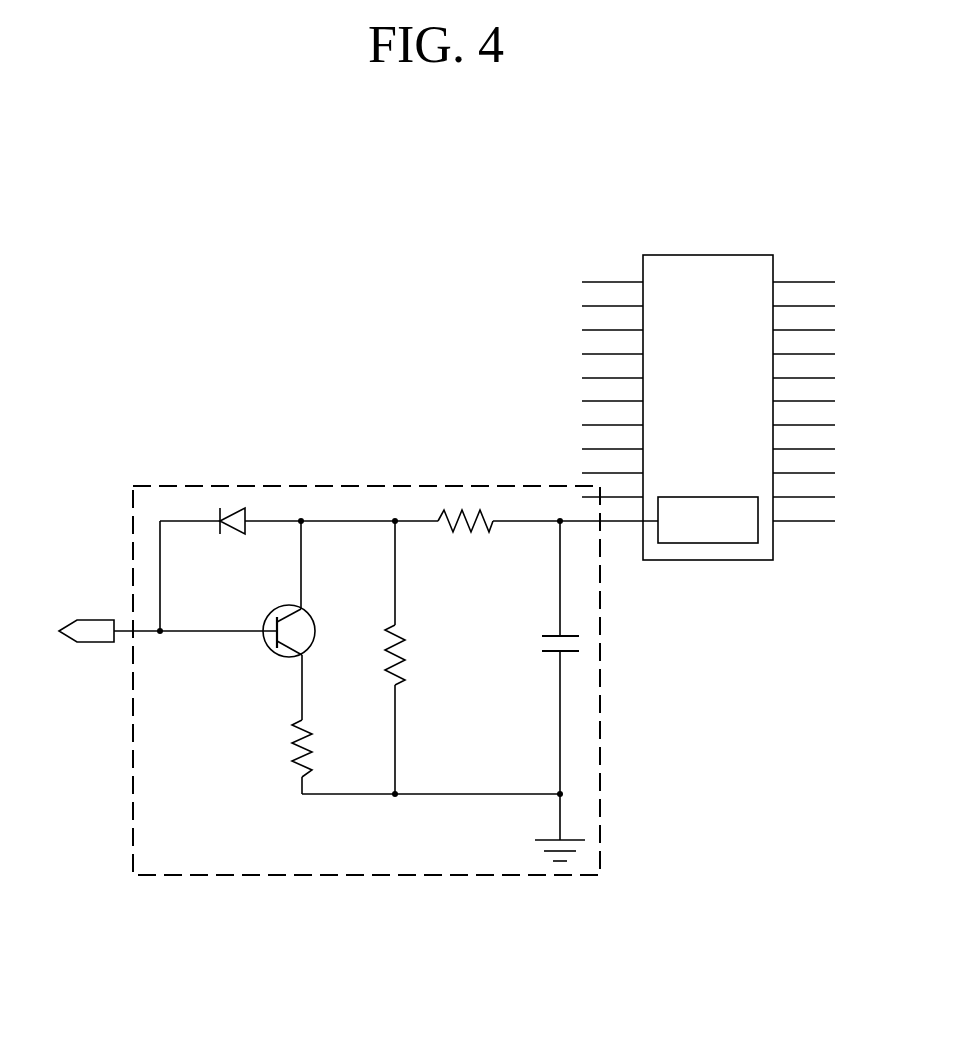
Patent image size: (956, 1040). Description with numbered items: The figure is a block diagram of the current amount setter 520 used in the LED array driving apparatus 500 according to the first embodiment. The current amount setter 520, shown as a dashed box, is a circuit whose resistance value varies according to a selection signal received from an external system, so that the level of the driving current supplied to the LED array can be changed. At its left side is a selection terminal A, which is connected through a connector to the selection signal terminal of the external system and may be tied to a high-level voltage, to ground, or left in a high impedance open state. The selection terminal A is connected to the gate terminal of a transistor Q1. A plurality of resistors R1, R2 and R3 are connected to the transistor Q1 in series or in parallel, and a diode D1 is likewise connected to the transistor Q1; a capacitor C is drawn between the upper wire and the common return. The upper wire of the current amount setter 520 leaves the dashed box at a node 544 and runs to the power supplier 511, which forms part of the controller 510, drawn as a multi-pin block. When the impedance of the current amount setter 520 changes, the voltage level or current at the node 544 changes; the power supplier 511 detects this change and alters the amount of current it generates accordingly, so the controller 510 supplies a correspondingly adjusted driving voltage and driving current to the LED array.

The LED array driving apparatus 500 is at (210, 237).
The controller 510 is at (689, 396).
The power supplier 511 is at (689, 532).
The current amount setter 520 is at (372, 485).
The node 544 is at (602, 522).
The selection terminal A is at (98, 631).
The diode D1 is at (232, 536).
The transistor Q1 is at (298, 626).
The resistor R1 is at (465, 534).
The resistor R2 is at (410, 655).
The resistor R3 is at (316, 748).
The capacitor C is at (547, 645).